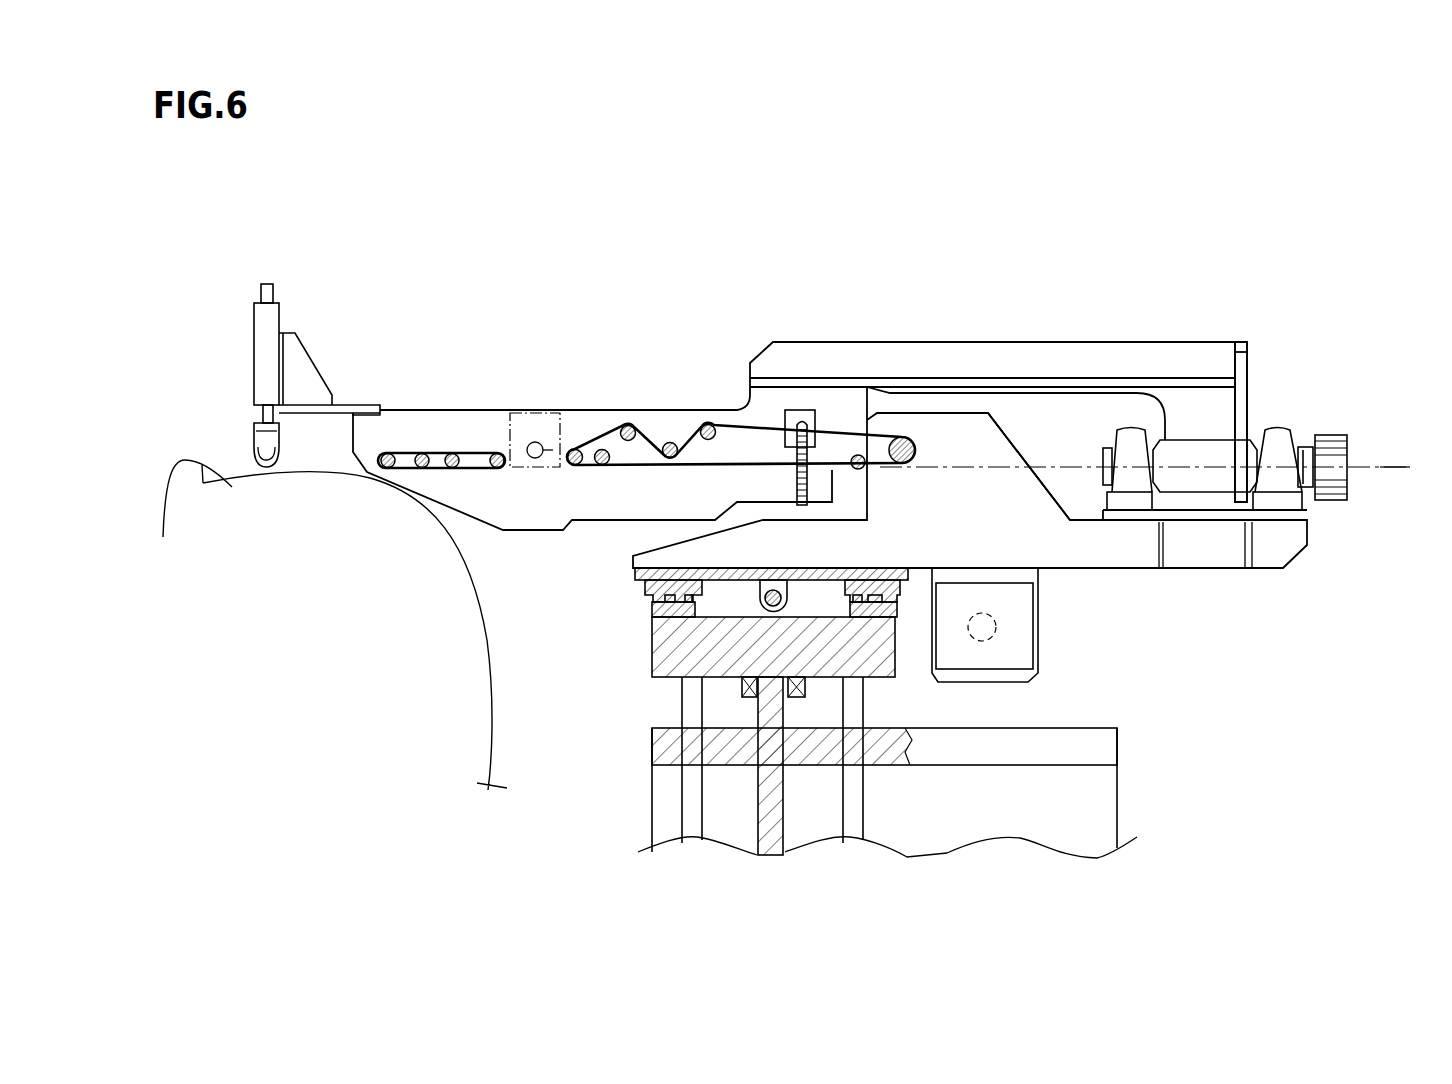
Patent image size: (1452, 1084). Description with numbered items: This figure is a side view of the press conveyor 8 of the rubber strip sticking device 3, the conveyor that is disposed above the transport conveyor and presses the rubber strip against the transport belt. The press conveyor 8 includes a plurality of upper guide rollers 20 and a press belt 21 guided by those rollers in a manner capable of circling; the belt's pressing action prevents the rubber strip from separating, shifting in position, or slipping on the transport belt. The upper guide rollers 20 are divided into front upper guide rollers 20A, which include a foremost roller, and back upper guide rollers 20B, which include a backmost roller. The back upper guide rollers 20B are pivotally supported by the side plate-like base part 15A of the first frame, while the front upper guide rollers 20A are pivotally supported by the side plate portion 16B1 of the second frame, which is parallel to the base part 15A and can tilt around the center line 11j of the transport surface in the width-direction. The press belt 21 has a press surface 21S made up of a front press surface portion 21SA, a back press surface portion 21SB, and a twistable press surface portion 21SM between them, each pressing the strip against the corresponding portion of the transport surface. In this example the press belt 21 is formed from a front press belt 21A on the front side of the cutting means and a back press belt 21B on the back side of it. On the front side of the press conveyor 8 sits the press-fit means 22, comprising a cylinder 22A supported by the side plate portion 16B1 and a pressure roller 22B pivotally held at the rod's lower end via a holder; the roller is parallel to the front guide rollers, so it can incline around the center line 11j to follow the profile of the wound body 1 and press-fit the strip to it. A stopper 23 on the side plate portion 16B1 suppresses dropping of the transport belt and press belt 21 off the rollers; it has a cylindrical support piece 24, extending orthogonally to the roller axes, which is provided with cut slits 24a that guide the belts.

The wound body 1 is at (332, 625).
The rubber strip sticking device 3 is at (1325, 217).
The press conveyor 8 is at (1295, 314).
The center line of the transport surface 11j is at (1384, 464).
The base part 15A is at (1020, 450).
The side plate portion 16B1 is at (443, 420).
The upper guide rollers 20 is at (373, 543).
The front upper guide rollers 20A is at (388, 468).
The back upper guide rollers 20B is at (903, 436).
The press belt 21 is at (685, 555).
The front press belt 21A is at (437, 499).
The back press belt 21B is at (836, 555).
The press surface 21S is at (403, 609).
The front press surface portion 21SA is at (374, 567).
The back press surface portion 21SB is at (873, 464).
The twistable press surface portion 21SM is at (630, 468).
The press-fit means 22 is at (268, 323).
The cylinder 22A is at (258, 342).
The pressure roller 22B is at (255, 460).
The stopper 23 is at (781, 396).
The cylindrical support piece 24 is at (800, 417).
The cut slits 24a is at (812, 445).